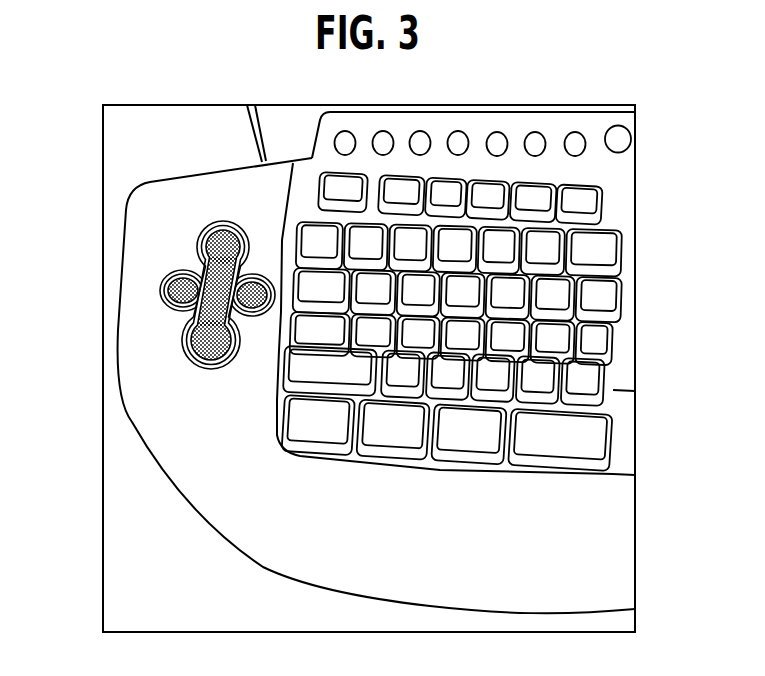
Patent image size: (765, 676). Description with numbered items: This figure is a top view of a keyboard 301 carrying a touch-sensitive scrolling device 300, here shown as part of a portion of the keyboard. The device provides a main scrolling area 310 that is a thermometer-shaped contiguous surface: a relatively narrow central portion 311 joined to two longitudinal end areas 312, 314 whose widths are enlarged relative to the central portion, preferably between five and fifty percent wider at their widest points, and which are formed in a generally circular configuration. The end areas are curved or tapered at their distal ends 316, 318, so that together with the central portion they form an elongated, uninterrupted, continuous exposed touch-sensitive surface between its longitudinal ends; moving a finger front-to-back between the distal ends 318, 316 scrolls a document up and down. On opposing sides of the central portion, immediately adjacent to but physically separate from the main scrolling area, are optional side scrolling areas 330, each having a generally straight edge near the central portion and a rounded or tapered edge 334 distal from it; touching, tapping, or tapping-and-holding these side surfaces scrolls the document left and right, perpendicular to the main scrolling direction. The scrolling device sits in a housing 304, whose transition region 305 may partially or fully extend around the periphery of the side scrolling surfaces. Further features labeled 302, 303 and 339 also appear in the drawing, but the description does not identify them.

The scrolling device 300 is at (246, 360).
The keyboard 301 is at (623, 212).
The key 302 is at (555, 292).
The left key ring 303 is at (197, 262).
The housing 304 is at (172, 416).
The transition region 305 is at (193, 318).
The main scrolling area 310 is at (161, 298).
The central portion 311 is at (244, 232).
The longitudinal end area 312 is at (224, 229).
The longitudinal end area 314 is at (203, 340).
The distal end 316 is at (218, 223).
The distal end 318 is at (208, 361).
The side scrolling area 330 is at (162, 284).
The rounded or tapered edge 334 is at (233, 320).
The right key ring 339 is at (252, 274).